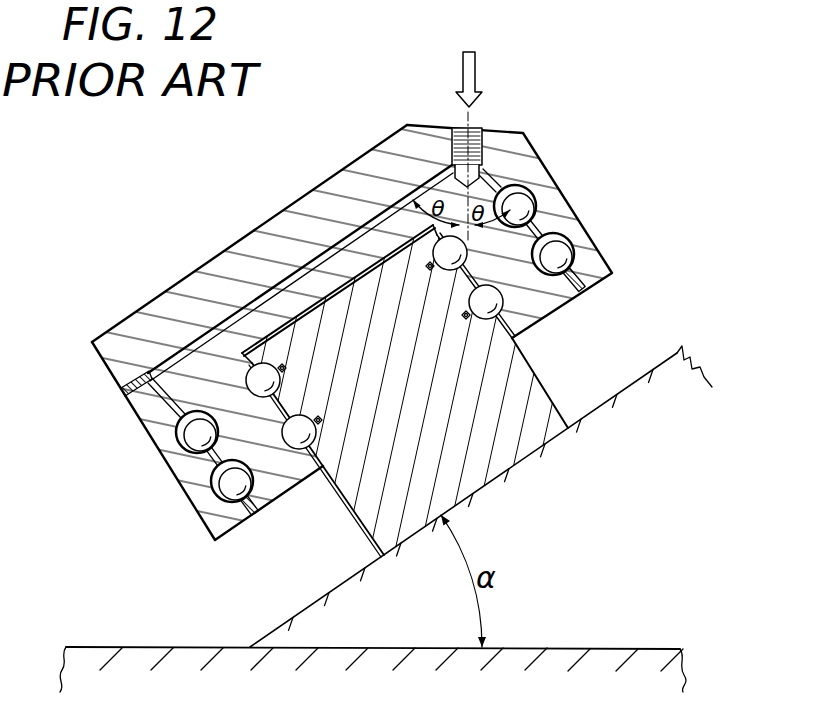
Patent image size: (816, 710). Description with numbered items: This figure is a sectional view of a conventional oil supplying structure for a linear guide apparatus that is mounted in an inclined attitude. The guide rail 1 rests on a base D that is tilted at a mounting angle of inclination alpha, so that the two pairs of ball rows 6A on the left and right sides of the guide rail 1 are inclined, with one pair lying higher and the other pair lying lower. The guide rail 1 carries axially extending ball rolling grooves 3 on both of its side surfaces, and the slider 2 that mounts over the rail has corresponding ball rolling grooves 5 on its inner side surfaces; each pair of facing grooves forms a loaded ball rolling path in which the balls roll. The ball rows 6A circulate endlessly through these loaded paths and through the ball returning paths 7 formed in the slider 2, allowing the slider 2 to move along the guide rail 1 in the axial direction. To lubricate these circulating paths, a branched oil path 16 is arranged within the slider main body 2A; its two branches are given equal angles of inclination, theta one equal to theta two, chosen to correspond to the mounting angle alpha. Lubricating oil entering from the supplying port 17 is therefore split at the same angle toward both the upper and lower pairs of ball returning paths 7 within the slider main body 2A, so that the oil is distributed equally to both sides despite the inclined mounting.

The guide rail 1 is at (530, 427).
The slider 2 is at (150, 300).
The slider main body 2A is at (227, 249).
The ball rolling grooves 3 is at (308, 452).
The ball rolling grooves 5 is at (305, 438).
The ball rows 6A is at (222, 487).
The ball returning path 7 is at (176, 428).
The branched oil path 16 is at (348, 232).
The supplying port 17 is at (477, 137).
The base D is at (627, 383).